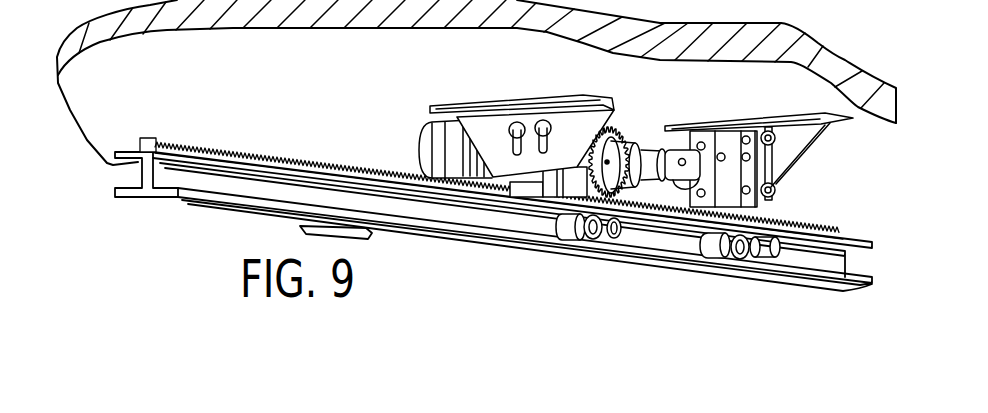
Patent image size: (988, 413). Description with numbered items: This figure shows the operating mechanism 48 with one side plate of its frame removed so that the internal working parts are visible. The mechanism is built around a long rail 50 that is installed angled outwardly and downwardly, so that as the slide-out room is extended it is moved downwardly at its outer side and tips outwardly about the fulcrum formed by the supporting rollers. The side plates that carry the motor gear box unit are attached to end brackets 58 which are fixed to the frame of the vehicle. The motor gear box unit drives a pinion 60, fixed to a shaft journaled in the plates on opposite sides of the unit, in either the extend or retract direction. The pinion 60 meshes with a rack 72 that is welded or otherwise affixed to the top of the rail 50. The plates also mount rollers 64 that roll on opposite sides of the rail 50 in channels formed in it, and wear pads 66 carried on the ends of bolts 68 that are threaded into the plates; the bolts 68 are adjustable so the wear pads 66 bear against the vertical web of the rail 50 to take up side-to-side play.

The operating mechanism 48 is at (615, 324).
The rail 50 is at (418, 212).
The end brackets 58 is at (467, 123).
The pinion 60 is at (622, 128).
The rollers 64 is at (573, 236).
The wear pads 66 is at (607, 240).
The bolts 68 is at (627, 236).
The rack 72 is at (267, 152).